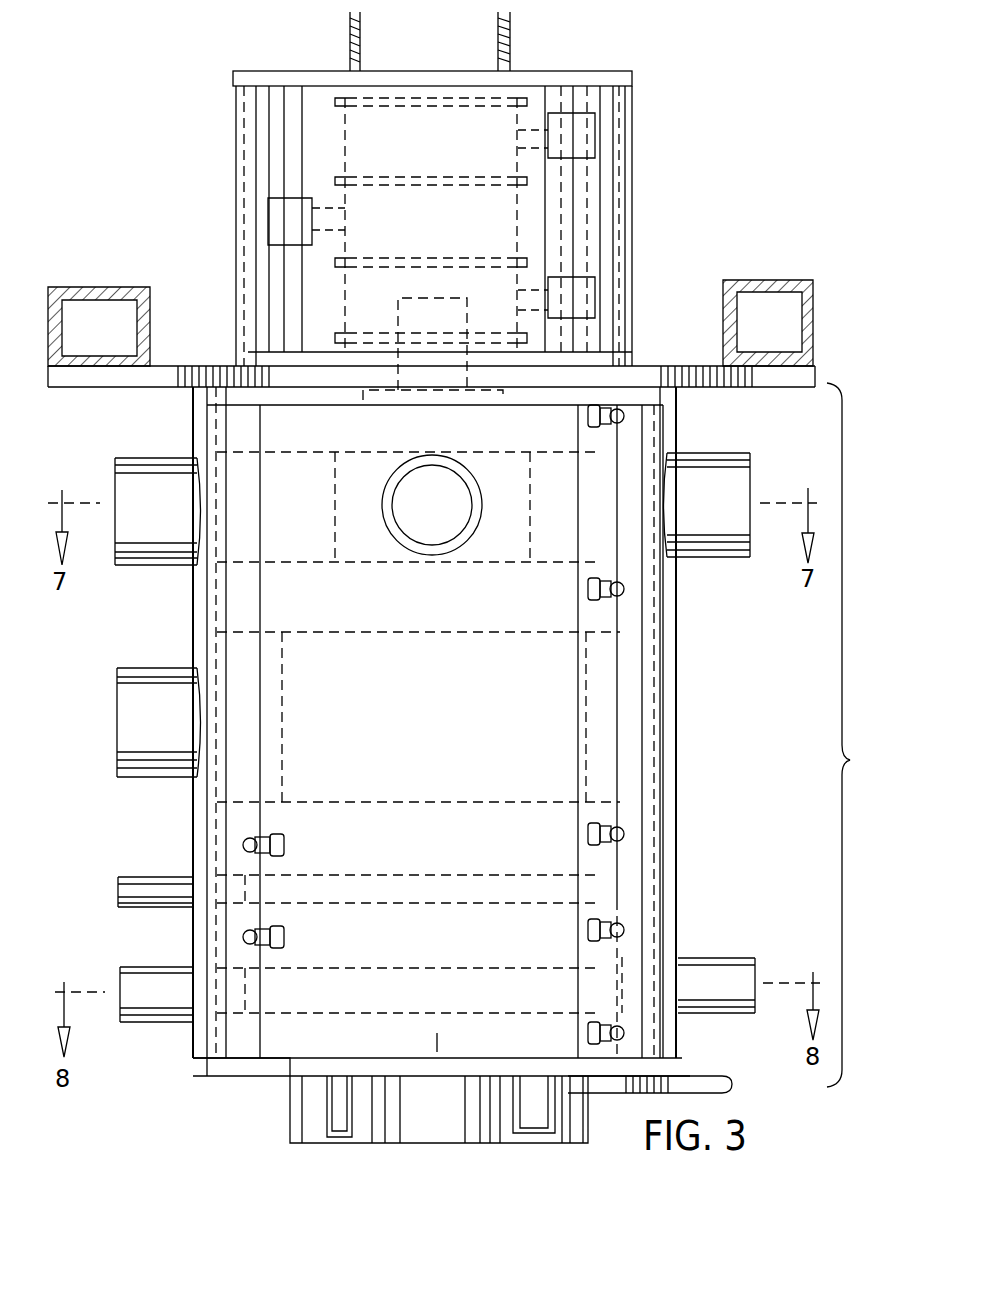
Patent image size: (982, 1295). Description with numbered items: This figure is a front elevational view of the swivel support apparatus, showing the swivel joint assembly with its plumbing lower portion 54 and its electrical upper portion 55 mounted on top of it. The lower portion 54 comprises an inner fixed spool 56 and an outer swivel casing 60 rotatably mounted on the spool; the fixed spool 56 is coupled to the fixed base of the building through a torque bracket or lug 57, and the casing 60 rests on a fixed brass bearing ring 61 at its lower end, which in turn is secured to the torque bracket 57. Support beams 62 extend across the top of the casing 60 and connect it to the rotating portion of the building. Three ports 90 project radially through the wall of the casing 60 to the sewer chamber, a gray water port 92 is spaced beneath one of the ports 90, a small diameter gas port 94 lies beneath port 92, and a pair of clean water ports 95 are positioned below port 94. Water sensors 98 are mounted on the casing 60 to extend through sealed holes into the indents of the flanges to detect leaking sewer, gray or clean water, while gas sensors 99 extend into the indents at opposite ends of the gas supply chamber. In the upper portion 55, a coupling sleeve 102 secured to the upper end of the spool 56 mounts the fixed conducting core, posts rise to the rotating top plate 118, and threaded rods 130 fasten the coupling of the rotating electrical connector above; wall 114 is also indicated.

The lower portion 54 is at (858, 735).
The upper portion 55 is at (645, 118).
The inner fixed spool 56 is at (290, 1100).
The torque bracket or lug 57 is at (708, 1082).
The outer swivel casing 60 is at (645, 680).
The brass bearing ring 61 is at (205, 1075).
The support beams 62 is at (748, 280).
The ports 90 is at (383, 505).
The gray water port 92 is at (133, 742).
The gas port 94 is at (162, 890).
The clean water ports 95 is at (715, 968).
The water sensors 98 is at (632, 1033).
The gas sensors 99 is at (272, 925).
The coupling sleeve 102 is at (431, 225).
The wall 114 is at (660, 393).
The top plate 118 is at (695, 365).
The threaded rods 130 is at (502, 22).